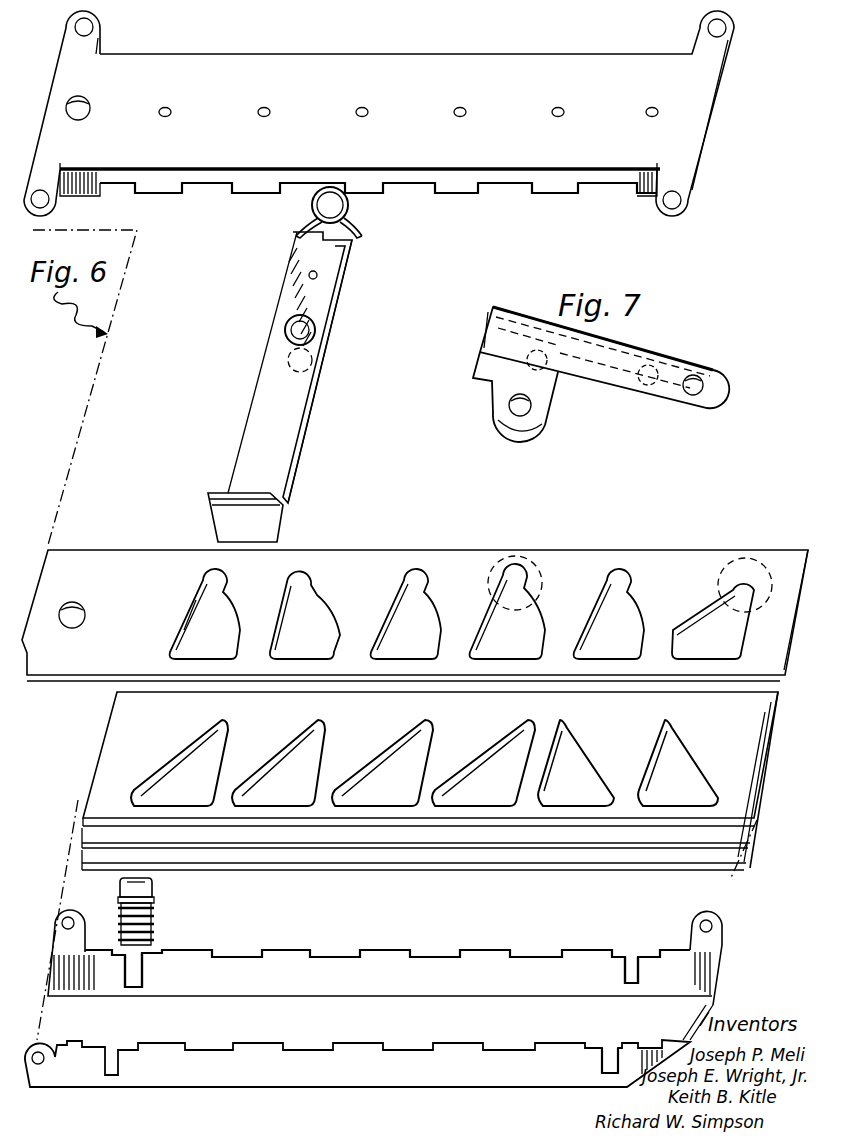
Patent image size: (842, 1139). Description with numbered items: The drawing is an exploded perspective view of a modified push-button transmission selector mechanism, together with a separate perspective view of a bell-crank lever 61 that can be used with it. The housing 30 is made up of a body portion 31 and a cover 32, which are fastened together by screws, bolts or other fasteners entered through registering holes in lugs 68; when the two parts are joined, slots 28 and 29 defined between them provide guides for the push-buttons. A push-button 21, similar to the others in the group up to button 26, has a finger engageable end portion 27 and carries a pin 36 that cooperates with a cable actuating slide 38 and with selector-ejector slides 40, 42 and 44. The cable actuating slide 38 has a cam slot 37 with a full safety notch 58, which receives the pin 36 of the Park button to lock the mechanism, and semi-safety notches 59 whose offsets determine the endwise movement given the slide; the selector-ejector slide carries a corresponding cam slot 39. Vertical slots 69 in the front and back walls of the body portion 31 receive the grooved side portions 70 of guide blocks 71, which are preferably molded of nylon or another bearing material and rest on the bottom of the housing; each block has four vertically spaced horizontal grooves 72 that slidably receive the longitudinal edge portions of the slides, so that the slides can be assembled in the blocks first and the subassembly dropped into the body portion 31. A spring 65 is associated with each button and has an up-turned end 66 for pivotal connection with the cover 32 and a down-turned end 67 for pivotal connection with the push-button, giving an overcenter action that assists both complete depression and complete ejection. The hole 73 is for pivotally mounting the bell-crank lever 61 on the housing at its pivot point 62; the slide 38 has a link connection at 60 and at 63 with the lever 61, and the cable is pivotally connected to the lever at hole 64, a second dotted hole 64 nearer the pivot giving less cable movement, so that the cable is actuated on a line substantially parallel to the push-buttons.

In FIG. 6, the cover 32 is at (415, 54).
In FIG. 6, the lugs 68 is at (736, 36).
In FIG. 6, the hole 73 is at (91, 108).
In FIG. 6, the spring 65 is at (310, 198).
In FIG. 6, the up-turned end 66 is at (290, 231).
In FIG. 6, the down-turned end 67 is at (362, 227).
In FIG. 6, the pin 36 is at (318, 343).
In FIG. 6, the push-button 21 is at (300, 437).
In FIG. 6, the push-button 26 is at (320, 371).
In FIG. 6, the finger engageable end portion 27 is at (285, 534).
In FIG. 6, the cable actuating slide 38 is at (417, 552).
In FIG. 6, the link connection 60 is at (83, 608).
In FIG. 6, the full safety notch 58 is at (205, 578).
In FIG. 6, the cam slot 37 is at (186, 612).
In FIG. 6, the semi-safety notches 59 is at (405, 580).
In FIG. 6, the cam slot 39 is at (178, 742).
In FIG. 6, the selector-ejector slide 40 is at (776, 706).
In FIG. 6, the selector-ejector slide 42 is at (770, 734).
In FIG. 6, the selector-ejector slide 44 is at (763, 760).
In FIG. 6, the grooved side portions 70 is at (154, 884).
In FIG. 6, the guide block 71 is at (117, 897).
In FIG. 6, the horizontal grooves 72 is at (119, 925).
In FIG. 6, the slot 29 is at (222, 951).
In FIG. 6, the vertical slots 69 is at (145, 982).
In FIG. 6, the slot 28 is at (203, 1045).
In FIG. 6, the body portion 31 is at (202, 1080).
In FIG. 6, the housing 30 is at (348, 1080).
In FIG. 7, the bell-crank lever 61 is at (606, 377).
In FIG. 7, the pivot point 62 is at (548, 358).
In FIG. 7, the pivotal connection 63 is at (512, 406).
In FIG. 7, the hole 64 is at (670, 365).